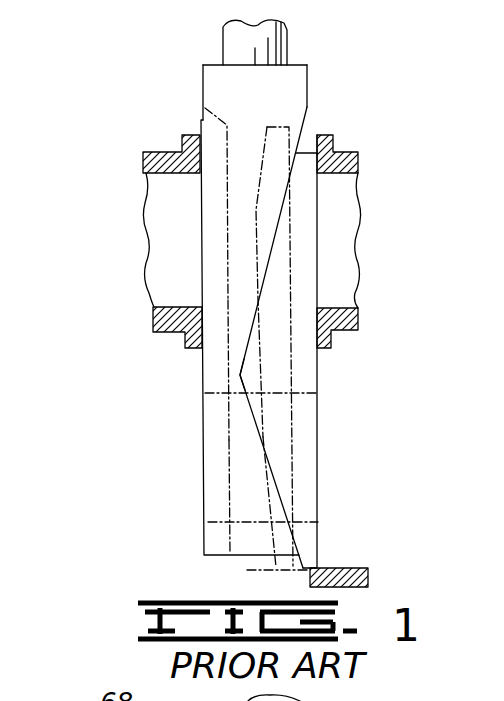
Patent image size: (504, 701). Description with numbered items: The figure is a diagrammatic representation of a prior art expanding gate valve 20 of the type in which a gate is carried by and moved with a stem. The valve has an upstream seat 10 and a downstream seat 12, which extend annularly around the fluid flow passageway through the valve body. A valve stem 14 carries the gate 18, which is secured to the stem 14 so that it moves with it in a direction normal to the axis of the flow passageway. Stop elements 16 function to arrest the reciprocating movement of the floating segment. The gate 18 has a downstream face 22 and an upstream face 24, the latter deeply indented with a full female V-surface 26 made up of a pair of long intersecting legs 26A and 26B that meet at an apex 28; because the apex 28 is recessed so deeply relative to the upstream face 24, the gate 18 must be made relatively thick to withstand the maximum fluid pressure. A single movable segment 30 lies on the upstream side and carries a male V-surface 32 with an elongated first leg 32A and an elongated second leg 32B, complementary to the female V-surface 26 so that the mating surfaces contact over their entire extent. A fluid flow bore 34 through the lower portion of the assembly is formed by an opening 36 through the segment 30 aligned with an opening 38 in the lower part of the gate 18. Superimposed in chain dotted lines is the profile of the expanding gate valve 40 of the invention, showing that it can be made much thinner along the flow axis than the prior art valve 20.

The upstream seat 10 is at (343, 323).
The downstream seat 12 is at (178, 308).
The valve stem 14 is at (268, 42).
The stop elements 16 is at (335, 568).
The gate member 18 is at (270, 100).
The prior art expanding gate valve 20 is at (249, 306).
The downstream face 22 is at (203, 374).
The upstream face 24 is at (308, 89).
The full V-surface 26 is at (272, 253).
The first leg of full V-surface 26A is at (291, 203).
The second leg of full V-surface 26B is at (296, 470).
The apex 28 is at (243, 375).
The movable segment 30 is at (301, 297).
The male V-surface 32 is at (247, 409).
The first leg of male V-surface 32A is at (257, 308).
The second leg of male V-surface 32B is at (278, 498).
The fluid flow bore 34 is at (237, 521).
The opening through segment 36 is at (297, 428).
The opening in gate 38 is at (207, 398).
The expanding gate valve of the present invention 40 is at (246, 566).